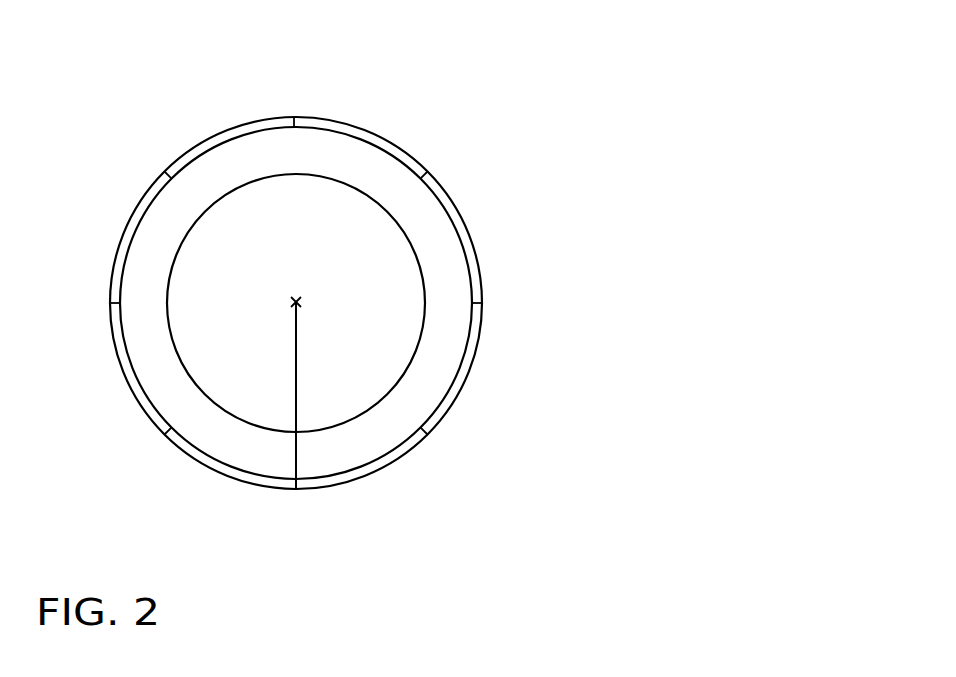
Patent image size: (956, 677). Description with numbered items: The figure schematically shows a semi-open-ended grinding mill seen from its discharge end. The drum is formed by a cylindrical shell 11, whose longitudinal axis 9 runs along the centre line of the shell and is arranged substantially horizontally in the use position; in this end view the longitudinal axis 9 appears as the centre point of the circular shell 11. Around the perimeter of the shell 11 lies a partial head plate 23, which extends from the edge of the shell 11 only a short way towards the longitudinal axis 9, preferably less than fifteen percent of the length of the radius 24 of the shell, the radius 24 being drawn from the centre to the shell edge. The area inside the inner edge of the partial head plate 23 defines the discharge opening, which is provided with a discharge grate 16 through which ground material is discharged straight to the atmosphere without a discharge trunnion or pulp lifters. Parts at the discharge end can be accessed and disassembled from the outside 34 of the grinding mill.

The longitudinal axis 9 is at (298, 298).
The cylindrical shell 11 is at (370, 138).
The discharge grate 16 is at (340, 325).
The partial head plate 23 is at (282, 151).
The radius 24 is at (298, 363).
The outside 34 is at (544, 161).